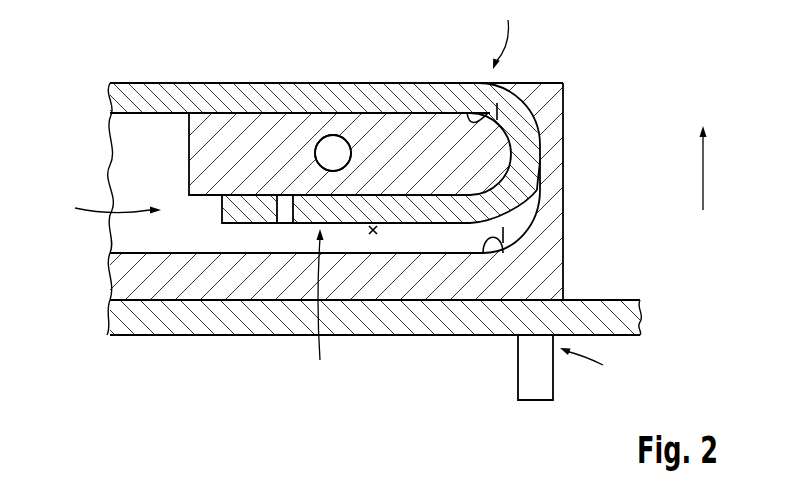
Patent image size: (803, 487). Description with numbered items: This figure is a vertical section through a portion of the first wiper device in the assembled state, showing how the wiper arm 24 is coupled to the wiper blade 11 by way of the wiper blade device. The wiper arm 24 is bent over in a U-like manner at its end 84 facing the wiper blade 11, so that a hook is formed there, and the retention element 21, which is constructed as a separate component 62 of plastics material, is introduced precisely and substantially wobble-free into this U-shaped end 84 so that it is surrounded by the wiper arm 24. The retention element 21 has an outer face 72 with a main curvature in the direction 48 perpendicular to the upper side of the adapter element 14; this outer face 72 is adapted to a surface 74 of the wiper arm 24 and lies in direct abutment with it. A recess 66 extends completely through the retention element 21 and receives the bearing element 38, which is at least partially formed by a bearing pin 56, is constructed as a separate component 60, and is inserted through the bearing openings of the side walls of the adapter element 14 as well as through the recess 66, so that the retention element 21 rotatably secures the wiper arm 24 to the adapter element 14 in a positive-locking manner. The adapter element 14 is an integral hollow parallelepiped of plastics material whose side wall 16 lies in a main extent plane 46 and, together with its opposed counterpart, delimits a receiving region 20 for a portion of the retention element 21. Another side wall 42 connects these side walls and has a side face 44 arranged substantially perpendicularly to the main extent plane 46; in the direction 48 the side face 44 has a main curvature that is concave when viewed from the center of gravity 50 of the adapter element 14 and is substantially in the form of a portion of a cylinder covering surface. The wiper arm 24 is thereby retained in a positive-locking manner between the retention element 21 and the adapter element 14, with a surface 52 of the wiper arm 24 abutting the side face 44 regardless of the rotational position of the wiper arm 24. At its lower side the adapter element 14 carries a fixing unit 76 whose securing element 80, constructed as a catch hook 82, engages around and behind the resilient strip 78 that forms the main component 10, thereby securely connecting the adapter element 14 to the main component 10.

The wiper blade 11 is at (88, 42).
The wiper arm 24 is at (162, 97).
The retention element 21 is at (350, 114).
The separate component 62 is at (218, 140).
The bearing element 38 is at (335, 102).
The bearing pin 56 is at (335, 102).
The separate component 60 is at (340, 150).
The recess 66 is at (352, 131).
The surface 74 is at (467, 113).
The end 84 is at (505, 34).
The outer face 72 is at (507, 120).
The other side wall 42 is at (550, 113).
The direction 48 is at (703, 180).
The surface 52 is at (517, 207).
The adapter element 14 is at (550, 260).
The main extent plane 46 is at (105, 210).
The side wall 16 is at (258, 240).
The receiving region 20 is at (320, 309).
The center of gravity 50 is at (373, 234).
The side face 44 is at (483, 253).
The main component 10 is at (414, 317).
The resilient strip 78 is at (625, 318).
The fixing unit 76 is at (593, 364).
The securing element 80 is at (545, 392).
The catch hook 82 is at (537, 382).